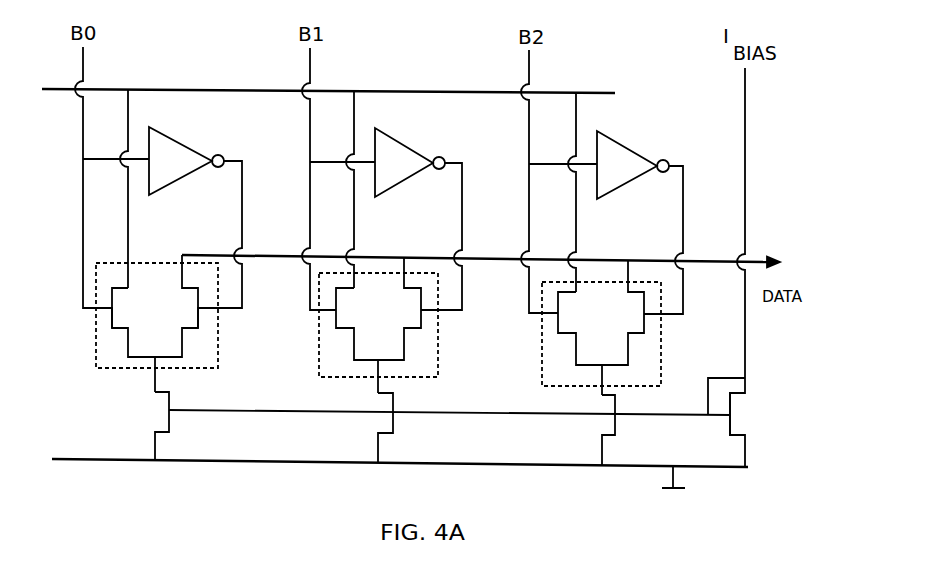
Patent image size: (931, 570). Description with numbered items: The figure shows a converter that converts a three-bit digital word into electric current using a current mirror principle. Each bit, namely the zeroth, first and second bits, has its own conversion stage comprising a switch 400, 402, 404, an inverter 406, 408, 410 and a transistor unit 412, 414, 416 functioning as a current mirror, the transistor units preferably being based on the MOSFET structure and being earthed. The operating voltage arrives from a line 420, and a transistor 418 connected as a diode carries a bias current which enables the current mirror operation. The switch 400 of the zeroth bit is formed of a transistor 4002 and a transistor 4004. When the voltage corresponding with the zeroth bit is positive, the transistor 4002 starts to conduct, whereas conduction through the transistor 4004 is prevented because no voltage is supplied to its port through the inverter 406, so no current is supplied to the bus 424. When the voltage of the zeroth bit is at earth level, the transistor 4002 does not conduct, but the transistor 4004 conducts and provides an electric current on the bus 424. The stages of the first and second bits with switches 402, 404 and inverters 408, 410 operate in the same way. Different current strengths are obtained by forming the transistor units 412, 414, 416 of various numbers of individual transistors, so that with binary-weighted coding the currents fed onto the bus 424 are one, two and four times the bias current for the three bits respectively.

The switch 400 is at (135, 263).
The switch 402 is at (438, 340).
The switch 404 is at (541, 337).
The inverter 406 is at (177, 138).
The inverter 408 is at (402, 145).
The inverter 410 is at (620, 143).
The transistor unit 412 is at (170, 420).
The transistor unit 414 is at (395, 421).
The transistor unit 416 is at (617, 425).
The transistor connected as a diode 418 is at (727, 424).
The line 420 is at (475, 90).
The bus 424 is at (753, 260).
The transistor 4002 is at (112, 320).
The transistor 4004 is at (197, 328).